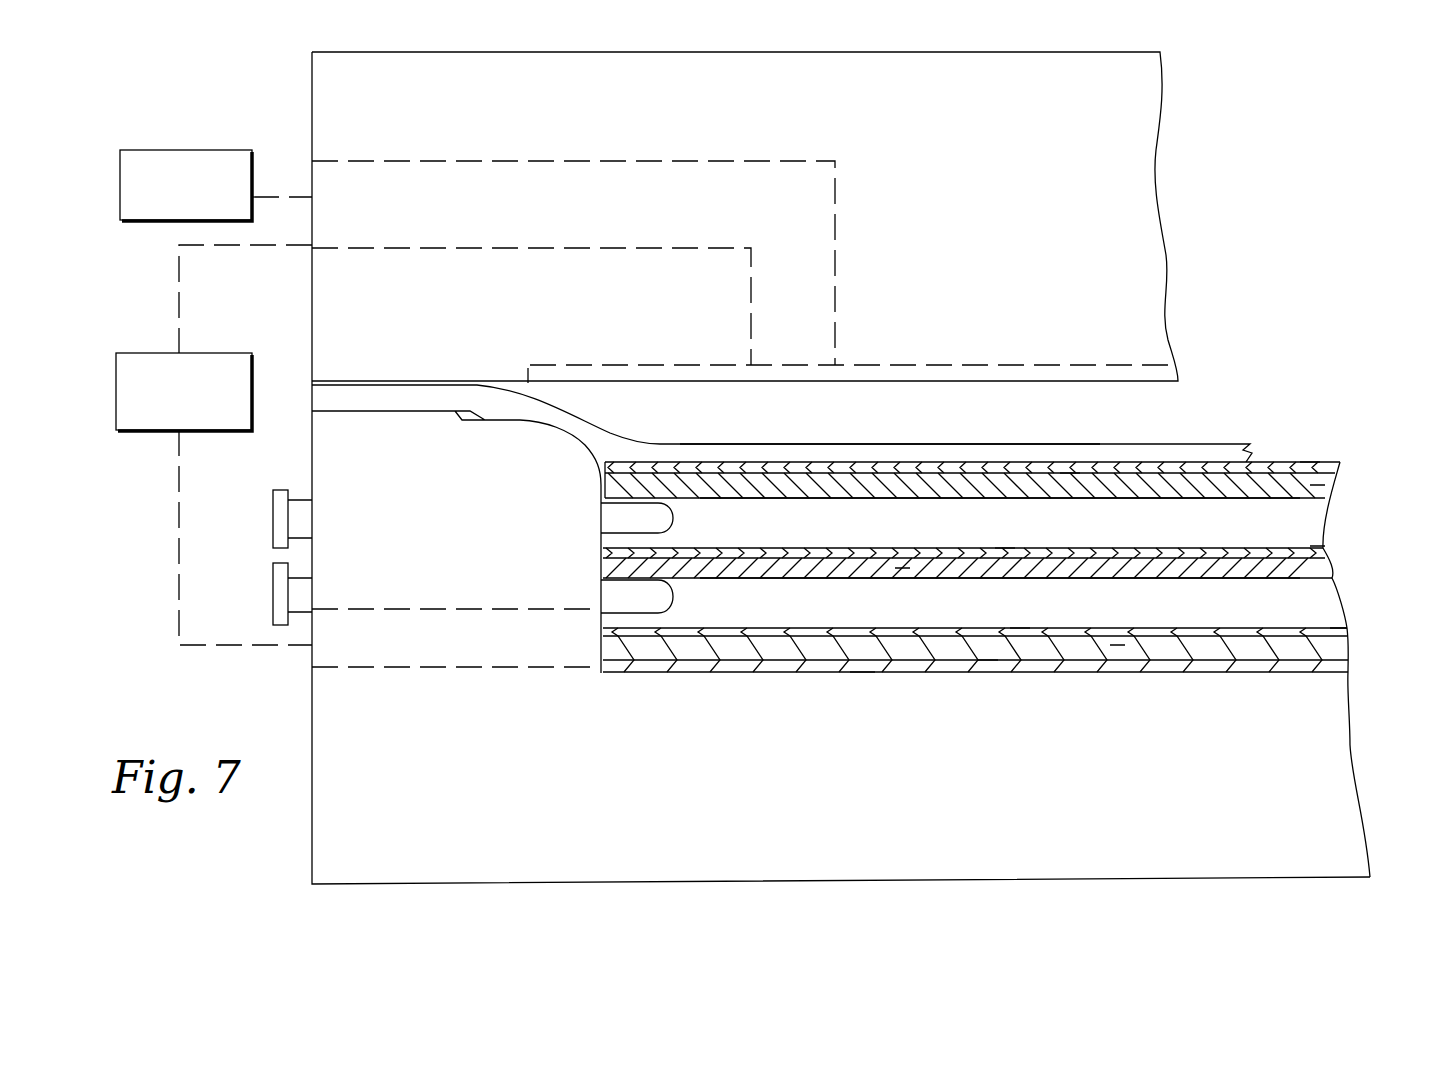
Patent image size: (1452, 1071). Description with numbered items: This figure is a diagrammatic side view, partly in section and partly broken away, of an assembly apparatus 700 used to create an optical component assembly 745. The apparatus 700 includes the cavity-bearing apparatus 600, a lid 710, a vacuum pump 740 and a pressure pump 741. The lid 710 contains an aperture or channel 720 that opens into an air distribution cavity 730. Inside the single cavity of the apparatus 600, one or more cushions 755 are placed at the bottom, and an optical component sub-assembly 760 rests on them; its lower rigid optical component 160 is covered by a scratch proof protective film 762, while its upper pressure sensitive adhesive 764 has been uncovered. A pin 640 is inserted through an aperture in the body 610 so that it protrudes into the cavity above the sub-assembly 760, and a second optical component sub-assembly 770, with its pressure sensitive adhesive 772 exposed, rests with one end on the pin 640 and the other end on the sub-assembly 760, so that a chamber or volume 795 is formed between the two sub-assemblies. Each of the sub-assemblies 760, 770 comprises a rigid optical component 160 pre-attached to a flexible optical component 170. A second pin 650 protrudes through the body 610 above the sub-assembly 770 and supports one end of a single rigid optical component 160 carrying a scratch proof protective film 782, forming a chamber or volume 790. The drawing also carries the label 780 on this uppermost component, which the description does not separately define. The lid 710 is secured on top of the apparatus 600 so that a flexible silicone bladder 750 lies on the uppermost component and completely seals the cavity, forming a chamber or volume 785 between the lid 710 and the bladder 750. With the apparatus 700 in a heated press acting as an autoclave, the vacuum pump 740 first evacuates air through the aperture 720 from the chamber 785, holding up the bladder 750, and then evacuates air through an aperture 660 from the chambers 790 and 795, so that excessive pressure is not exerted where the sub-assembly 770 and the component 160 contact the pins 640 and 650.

The apparatus 600 is at (265, 820).
The body 610 is at (1340, 788).
The pin 640 is at (273, 587).
The pin 650 is at (273, 508).
The aperture 660 is at (460, 668).
The apparatus 700 is at (1272, 208).
The lid 710 is at (442, 98).
The aperture or channel 720 is at (593, 160).
The air distribution cavity 730 is at (913, 363).
The vacuum pump 740 is at (140, 352).
The pressure pump 741 is at (226, 150).
The optical component assembly 745 is at (1312, 453).
The flexible silicone bladder 750 is at (855, 455).
The cushions 755 is at (862, 660).
The optical component sub-assembly 760 is at (1350, 645).
The scratch proof protective film 762 is at (988, 660).
The pressure sensitive adhesive 764 is at (1020, 629).
The optical component sub-assembly 770 is at (1336, 563).
The pressure sensitive adhesive 772 is at (1003, 550).
The top layer 780 is at (1340, 463).
The scratch proof protective film 782 is at (1066, 466).
The chamber or volume 785 is at (695, 422).
The chamber or volume 790 is at (775, 539).
The chamber or volume 795 is at (780, 617).
The rigid optical component 160 is at (1325, 486).
The flexible optical component 170 is at (1325, 546).